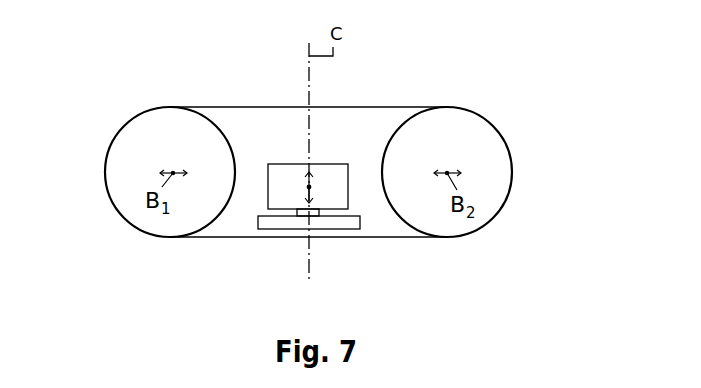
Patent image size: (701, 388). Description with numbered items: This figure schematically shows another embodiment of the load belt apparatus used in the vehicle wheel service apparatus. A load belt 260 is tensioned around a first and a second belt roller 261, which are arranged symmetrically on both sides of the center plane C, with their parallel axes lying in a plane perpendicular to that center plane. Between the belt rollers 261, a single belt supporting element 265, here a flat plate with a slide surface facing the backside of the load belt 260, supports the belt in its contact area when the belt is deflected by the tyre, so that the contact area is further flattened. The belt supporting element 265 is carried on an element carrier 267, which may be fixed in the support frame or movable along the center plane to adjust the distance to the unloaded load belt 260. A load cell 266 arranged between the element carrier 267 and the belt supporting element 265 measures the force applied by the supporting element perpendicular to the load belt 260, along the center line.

The load belt 260 is at (328, 204).
The belt roller 261 is at (148, 129).
The belt supporting element 265 is at (277, 227).
The load cell 266 is at (282, 170).
The element carrier 267 is at (336, 168).